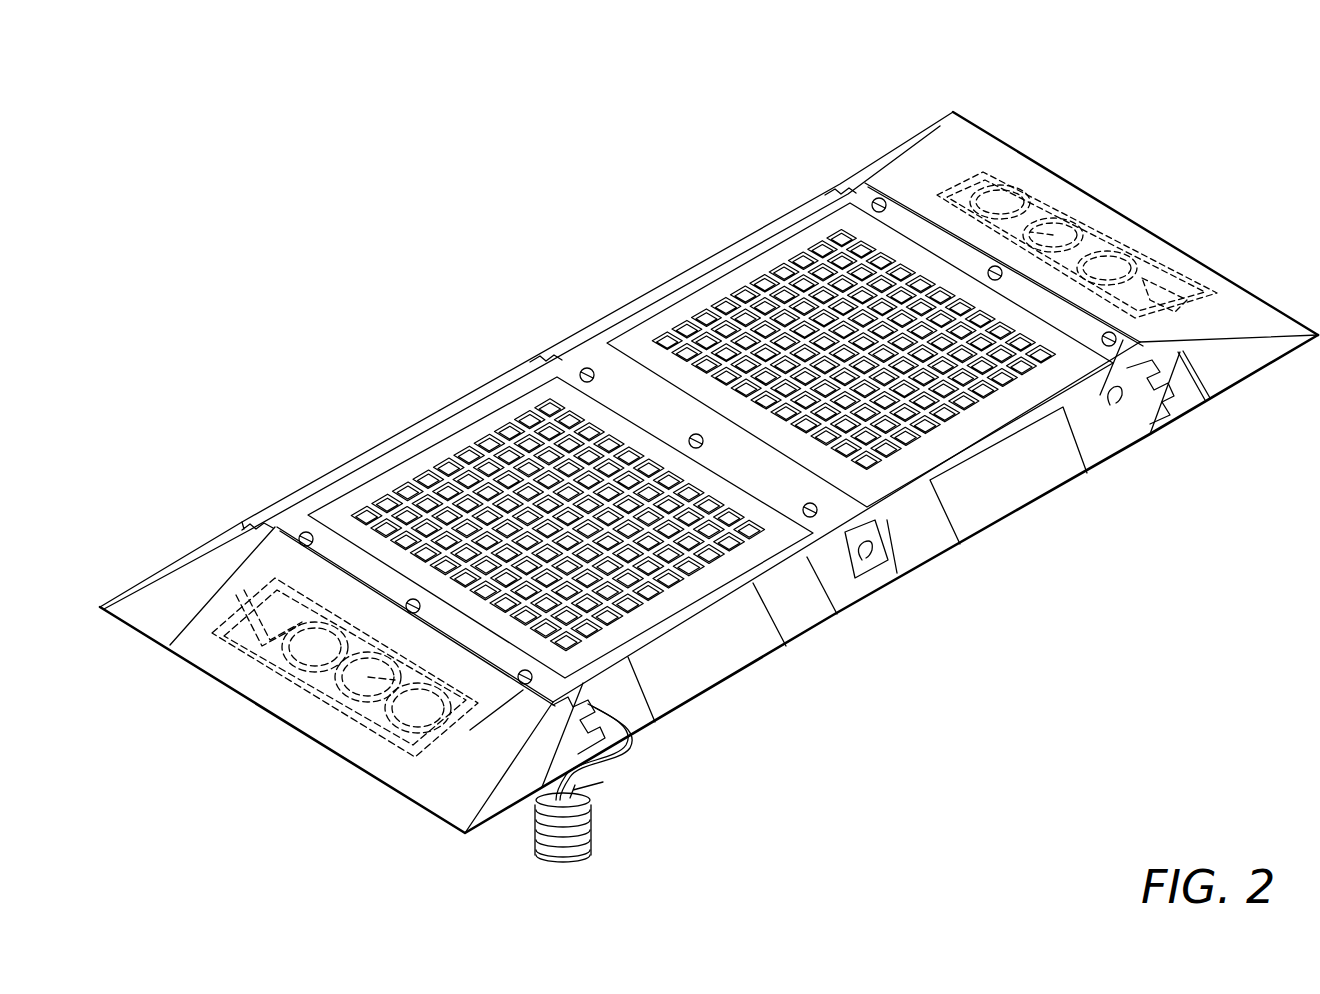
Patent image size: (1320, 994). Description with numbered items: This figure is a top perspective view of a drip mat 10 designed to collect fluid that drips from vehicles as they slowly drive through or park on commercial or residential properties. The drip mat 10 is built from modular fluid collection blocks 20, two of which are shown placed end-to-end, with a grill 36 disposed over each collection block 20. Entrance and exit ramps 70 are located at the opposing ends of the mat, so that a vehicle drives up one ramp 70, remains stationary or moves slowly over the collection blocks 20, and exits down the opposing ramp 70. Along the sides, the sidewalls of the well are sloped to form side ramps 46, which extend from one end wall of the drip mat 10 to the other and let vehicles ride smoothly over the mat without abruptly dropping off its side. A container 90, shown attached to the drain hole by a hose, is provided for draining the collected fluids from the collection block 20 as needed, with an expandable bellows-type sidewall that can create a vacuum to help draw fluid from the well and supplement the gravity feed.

The drip mat 10 is at (474, 130).
The modular fluid collection block 20 is at (997, 517).
The grill 36 is at (755, 262).
The side ramp 46 is at (1050, 478).
The entrance and exit ramp 70 is at (1247, 370).
The container 90 is at (596, 823).